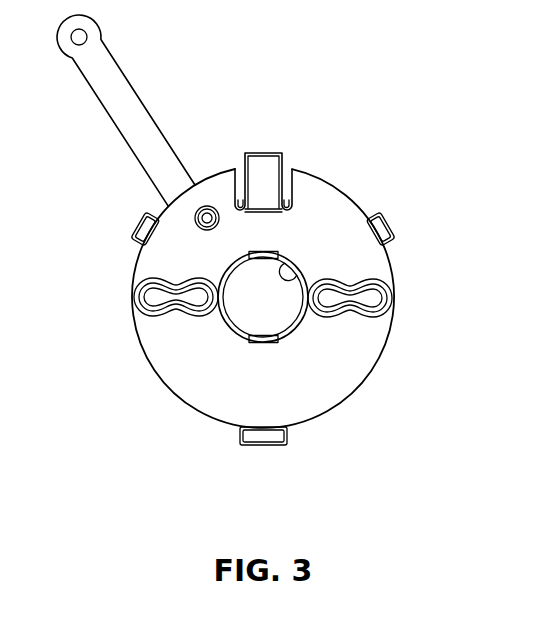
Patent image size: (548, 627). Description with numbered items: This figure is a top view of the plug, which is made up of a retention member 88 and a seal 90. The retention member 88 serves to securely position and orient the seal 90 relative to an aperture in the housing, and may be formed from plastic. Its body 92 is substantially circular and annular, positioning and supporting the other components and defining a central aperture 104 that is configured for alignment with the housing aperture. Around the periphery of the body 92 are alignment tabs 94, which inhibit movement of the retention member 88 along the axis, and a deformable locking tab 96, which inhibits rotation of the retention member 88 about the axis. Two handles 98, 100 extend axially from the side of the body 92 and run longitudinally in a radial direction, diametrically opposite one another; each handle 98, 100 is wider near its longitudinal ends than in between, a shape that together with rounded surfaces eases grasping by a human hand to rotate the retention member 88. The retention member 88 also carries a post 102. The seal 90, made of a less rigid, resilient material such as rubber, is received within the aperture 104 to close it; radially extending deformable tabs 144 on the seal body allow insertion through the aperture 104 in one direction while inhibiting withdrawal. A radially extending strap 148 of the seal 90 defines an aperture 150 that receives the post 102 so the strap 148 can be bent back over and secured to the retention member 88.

The retention member 88 is at (352, 340).
The seal 90 is at (270, 321).
The body 92 is at (190, 362).
The alignment tabs 94 is at (137, 231).
The deformable locking tab 96 is at (263, 162).
The handle 98 is at (148, 296).
The handle 100 is at (376, 298).
The post 102 is at (195, 217).
The aperture 104 is at (290, 270).
The deformable tabs 144 is at (257, 343).
The strap 148 is at (135, 115).
The aperture 150 is at (83, 34).